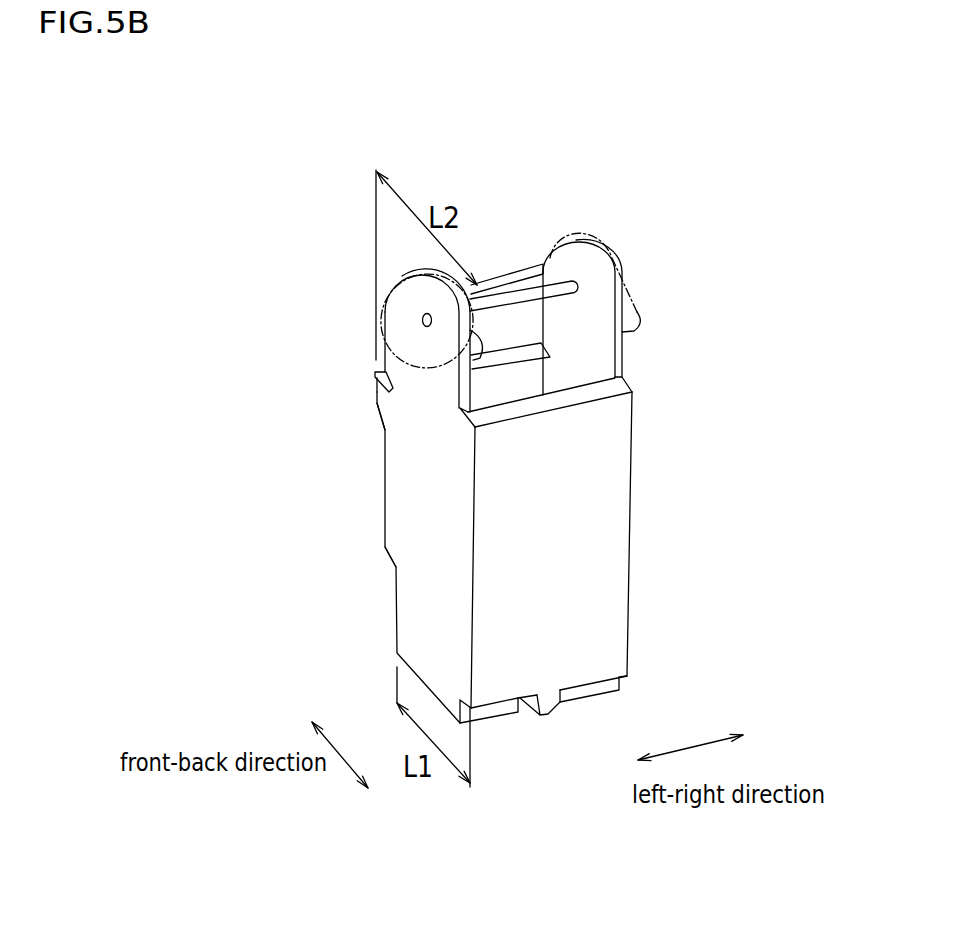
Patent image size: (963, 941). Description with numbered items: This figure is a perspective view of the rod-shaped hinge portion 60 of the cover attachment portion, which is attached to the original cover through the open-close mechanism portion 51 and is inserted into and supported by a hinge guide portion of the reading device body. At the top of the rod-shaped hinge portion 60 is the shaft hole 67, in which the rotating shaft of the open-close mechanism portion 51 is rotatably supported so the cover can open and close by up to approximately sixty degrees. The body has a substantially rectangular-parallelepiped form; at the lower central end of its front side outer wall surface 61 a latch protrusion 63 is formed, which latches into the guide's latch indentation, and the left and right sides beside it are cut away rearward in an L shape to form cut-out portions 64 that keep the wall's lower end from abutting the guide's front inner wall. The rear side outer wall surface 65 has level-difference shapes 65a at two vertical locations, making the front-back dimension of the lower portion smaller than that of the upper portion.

The open-close mechanism portion 51 is at (624, 279).
The rod-shaped hinge portion 60 is at (655, 460).
The front side outer wall surface 61 is at (622, 540).
The latch protrusion 63 is at (548, 708).
The cut-out portions 64 is at (490, 713).
The rear side outer wall surface 65 is at (376, 381).
The level-difference shapes 65a is at (380, 422).
The shaft hole 67 is at (513, 296).